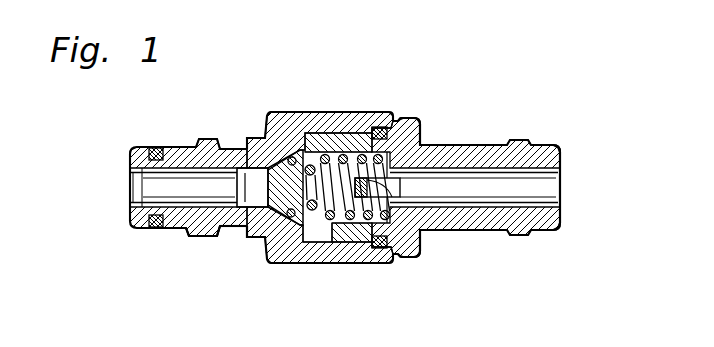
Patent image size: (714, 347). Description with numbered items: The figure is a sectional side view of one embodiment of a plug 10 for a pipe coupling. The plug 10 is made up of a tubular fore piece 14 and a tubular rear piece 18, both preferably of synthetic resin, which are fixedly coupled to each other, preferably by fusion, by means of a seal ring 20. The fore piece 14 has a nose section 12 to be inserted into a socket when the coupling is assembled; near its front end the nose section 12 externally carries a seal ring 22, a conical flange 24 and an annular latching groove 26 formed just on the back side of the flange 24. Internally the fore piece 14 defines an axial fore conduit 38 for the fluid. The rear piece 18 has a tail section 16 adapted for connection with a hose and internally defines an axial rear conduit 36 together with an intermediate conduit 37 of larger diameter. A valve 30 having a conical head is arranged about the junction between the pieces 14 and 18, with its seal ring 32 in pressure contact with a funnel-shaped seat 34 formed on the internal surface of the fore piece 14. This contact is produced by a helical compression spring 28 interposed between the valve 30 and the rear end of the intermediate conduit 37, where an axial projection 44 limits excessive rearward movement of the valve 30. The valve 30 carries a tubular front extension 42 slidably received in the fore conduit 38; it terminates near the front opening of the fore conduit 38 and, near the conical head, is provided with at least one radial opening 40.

The plug 10 is at (436, 115).
The nose section 12 is at (178, 146).
The tubular fore piece 14 is at (311, 95).
The tail section 16 is at (552, 148).
The tubular rear piece 18 is at (492, 152).
The seal ring 20 is at (385, 127).
The seal ring 22 is at (156, 146).
The conical flange 24 is at (208, 237).
The annular latching groove 26 is at (228, 240).
The helical compression spring 28 is at (366, 224).
The valve 30 is at (257, 232).
The seal ring 32 is at (295, 240).
The funnel-shaped seat 34 is at (280, 148).
The axial rear conduit 36 is at (478, 192).
The intermediate conduit 37 is at (331, 224).
The axial fore conduit 38 is at (133, 196).
The radial opening 40 is at (247, 187).
The tubular front extension 42 is at (173, 230).
The axial projection 44 is at (414, 232).